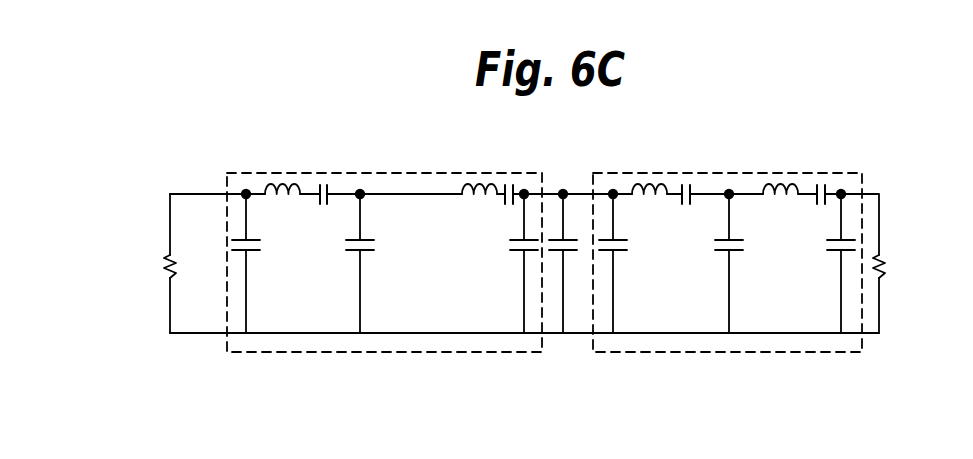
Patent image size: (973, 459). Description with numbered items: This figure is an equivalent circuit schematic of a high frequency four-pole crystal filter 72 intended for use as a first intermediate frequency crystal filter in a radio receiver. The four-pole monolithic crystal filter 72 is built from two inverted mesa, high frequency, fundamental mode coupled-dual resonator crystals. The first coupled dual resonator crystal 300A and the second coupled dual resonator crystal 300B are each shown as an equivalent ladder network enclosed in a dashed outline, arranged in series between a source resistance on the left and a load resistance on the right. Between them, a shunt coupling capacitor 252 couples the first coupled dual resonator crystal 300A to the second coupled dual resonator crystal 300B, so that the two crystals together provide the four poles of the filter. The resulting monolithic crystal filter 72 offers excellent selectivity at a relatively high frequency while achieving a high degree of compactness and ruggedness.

The four-pole monolithic crystal filter 72 is at (275, 117).
The first coupled dual resonator crystal 300A is at (313, 173).
The second coupled dual resonator crystal 300B is at (837, 173).
The shunt coupling capacitor 252 is at (562, 221).